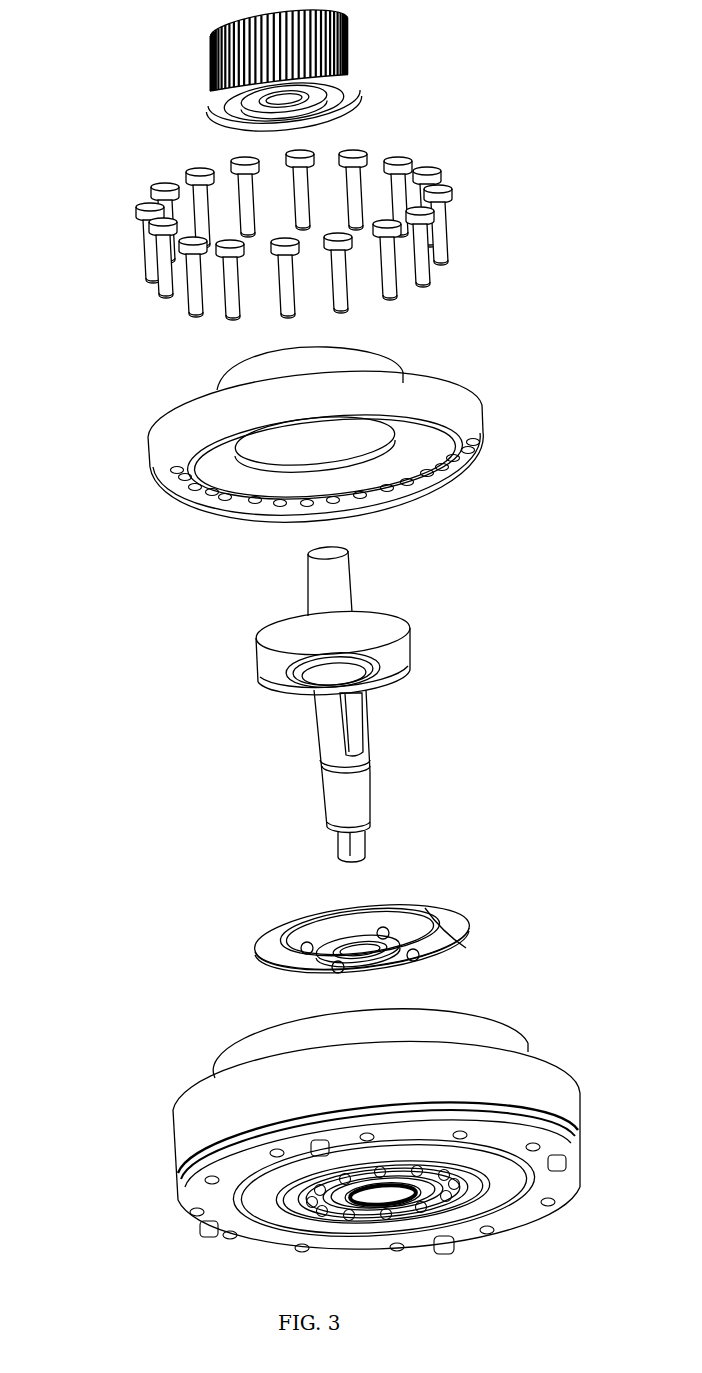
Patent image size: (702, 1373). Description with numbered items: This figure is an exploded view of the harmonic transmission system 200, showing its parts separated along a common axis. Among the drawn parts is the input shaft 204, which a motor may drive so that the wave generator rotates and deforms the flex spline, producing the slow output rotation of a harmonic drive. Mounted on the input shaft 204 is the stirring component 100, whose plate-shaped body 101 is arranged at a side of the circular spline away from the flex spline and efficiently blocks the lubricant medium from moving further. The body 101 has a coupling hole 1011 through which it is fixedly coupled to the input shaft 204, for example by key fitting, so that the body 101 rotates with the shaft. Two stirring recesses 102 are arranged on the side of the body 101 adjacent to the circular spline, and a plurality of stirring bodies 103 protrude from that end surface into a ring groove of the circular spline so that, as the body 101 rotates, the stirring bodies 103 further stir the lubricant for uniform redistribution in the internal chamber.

The harmonic transmission system 200 is at (95, 278).
The input shaft 204 is at (320, 592).
The stirring component 100 is at (290, 908).
The body 101 is at (262, 938).
The stirring recess 102 is at (427, 923).
The stirring body 103 is at (382, 932).
The coupling hole 1011 is at (357, 950).